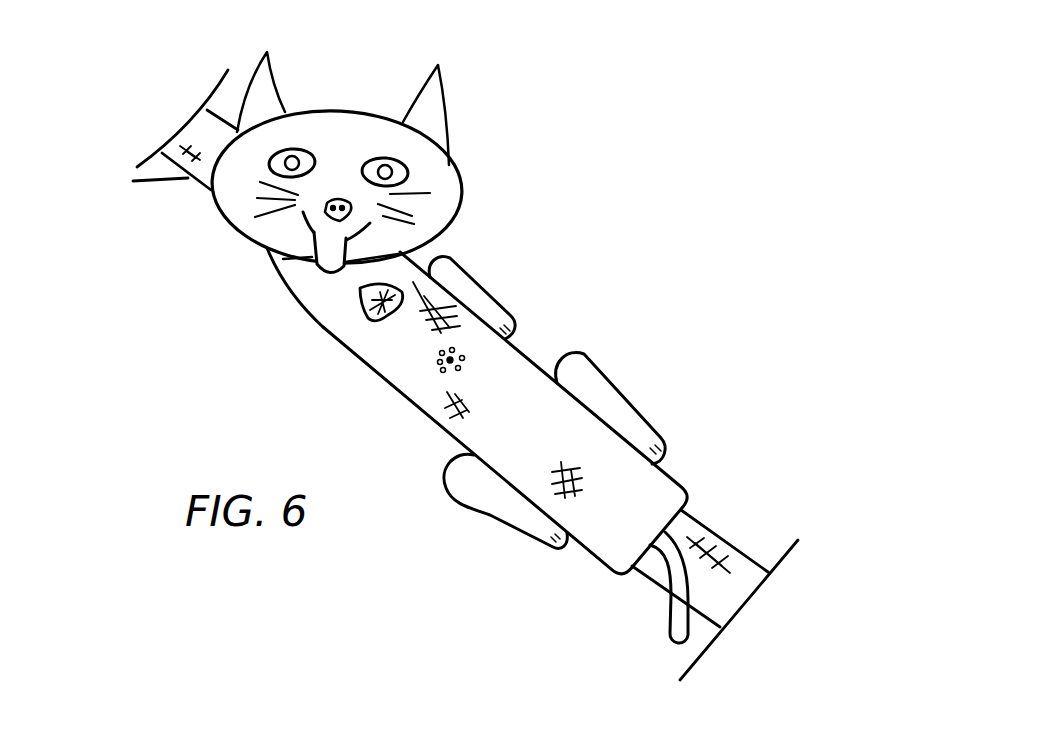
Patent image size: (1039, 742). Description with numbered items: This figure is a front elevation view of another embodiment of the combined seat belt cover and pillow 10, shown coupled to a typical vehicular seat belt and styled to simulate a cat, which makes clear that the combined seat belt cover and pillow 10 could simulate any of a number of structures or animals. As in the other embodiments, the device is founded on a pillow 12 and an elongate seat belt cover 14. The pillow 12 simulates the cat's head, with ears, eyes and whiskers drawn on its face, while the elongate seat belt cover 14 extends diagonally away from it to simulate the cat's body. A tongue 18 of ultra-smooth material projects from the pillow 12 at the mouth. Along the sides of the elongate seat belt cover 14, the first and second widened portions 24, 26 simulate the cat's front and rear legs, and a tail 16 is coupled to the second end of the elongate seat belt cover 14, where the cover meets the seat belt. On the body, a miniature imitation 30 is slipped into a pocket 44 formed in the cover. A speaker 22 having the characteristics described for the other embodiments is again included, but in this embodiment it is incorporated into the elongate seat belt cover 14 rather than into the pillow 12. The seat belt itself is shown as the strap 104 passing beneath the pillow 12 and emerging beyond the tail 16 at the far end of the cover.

The combined seat belt cover and pillow 10 is at (655, 210).
The pillow 12 is at (325, 110).
The elongate seat belt cover 14 is at (511, 436).
The tail 16 is at (672, 543).
The tongue 18 is at (287, 268).
The speaker 22 is at (443, 370).
The first widened portion 24 is at (473, 268).
The second widened portion 26 is at (610, 363).
The miniature imitation 30 is at (372, 292).
The pocket 44 is at (370, 317).
The first strap end 104 is at (133, 181).